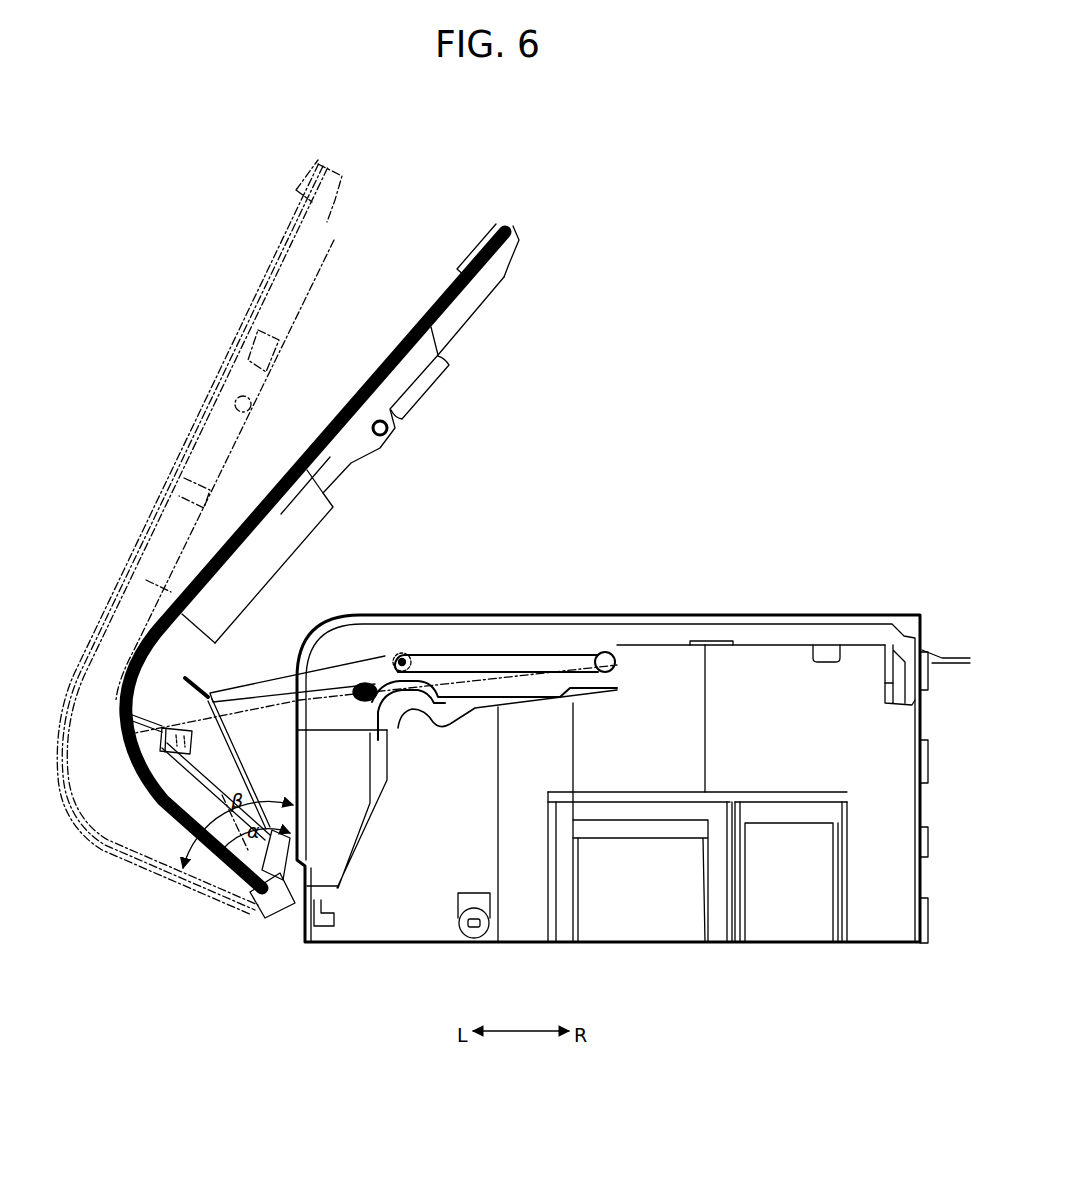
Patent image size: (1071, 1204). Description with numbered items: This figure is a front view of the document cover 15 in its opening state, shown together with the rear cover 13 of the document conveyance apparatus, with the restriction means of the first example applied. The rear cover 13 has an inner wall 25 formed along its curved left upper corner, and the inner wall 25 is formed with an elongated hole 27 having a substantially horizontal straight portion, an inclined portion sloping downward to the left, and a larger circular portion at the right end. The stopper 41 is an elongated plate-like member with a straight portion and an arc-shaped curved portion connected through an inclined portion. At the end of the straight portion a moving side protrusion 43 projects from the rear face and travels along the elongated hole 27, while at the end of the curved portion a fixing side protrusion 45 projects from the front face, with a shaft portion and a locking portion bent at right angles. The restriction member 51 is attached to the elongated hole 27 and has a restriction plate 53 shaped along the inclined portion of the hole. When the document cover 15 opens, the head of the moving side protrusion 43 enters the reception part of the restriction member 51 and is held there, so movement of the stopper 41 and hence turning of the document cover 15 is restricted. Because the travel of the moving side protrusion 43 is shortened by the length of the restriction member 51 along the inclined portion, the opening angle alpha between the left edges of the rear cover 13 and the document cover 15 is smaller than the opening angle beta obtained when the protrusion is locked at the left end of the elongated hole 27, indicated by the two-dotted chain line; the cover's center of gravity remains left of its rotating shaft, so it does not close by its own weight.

The rear cover 13 is at (846, 611).
The document cover 15 is at (409, 333).
The inner wall 25 is at (335, 838).
The elongated hole 27 is at (499, 652).
The stopper 41 is at (282, 674).
The moving side protrusion 43 is at (403, 652).
The fixing side protrusion 45 is at (187, 726).
The restriction member 51 is at (397, 708).
The restriction plate 53 is at (396, 702).